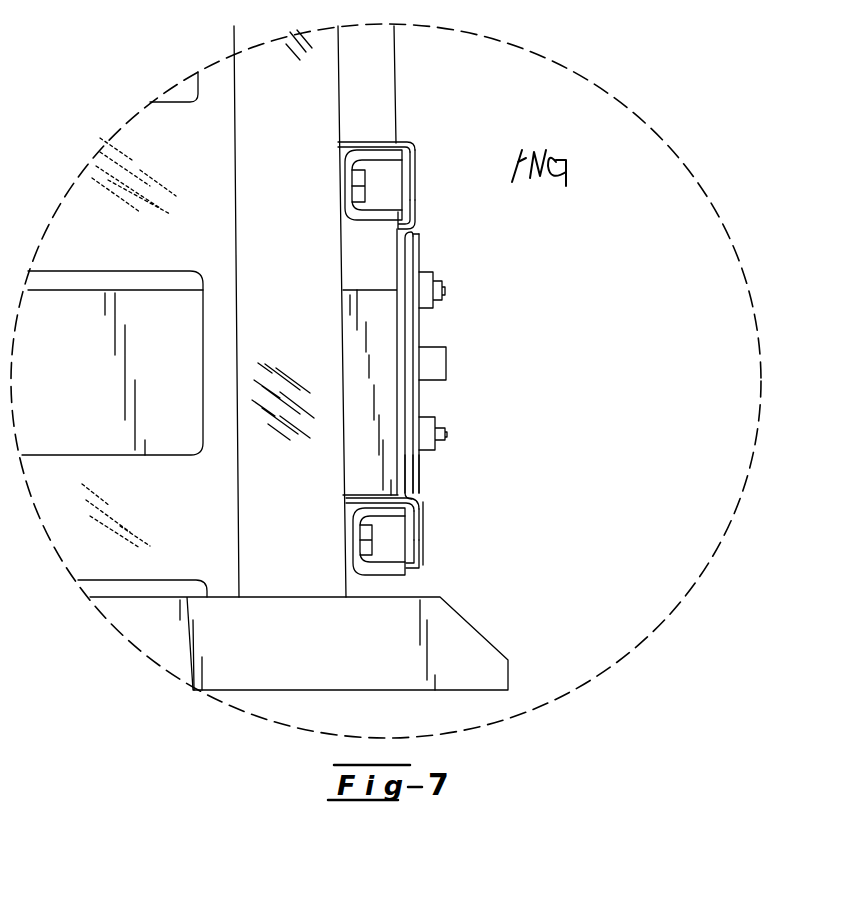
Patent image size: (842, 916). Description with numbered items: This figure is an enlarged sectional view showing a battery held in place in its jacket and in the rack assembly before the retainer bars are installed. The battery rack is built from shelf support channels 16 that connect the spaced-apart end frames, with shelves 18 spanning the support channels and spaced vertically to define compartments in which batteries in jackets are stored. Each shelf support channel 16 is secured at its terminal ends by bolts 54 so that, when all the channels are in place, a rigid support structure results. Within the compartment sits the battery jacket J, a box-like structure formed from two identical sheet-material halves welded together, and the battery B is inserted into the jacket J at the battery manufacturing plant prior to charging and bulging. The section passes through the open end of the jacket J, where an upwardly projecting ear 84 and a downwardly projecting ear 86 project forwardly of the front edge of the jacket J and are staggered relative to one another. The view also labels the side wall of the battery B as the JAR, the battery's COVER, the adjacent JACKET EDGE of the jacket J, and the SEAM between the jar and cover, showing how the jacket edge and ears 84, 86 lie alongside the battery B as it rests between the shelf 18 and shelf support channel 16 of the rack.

The shelf support channel 16 is at (372, 222).
The shelf 18 is at (372, 143).
The bolt 54 is at (360, 178).
The upwardly projecting ear 84 is at (418, 172).
The downwardly projecting ear 86 is at (417, 213).
The battery jacket J is at (348, 372).
The battery B is at (424, 470).
The jar wall JAR is at (400, 250).
The cover COVER is at (414, 318).
The jacket edge JACKET EDGE is at (440, 356).
The seam SEAM is at (415, 396).